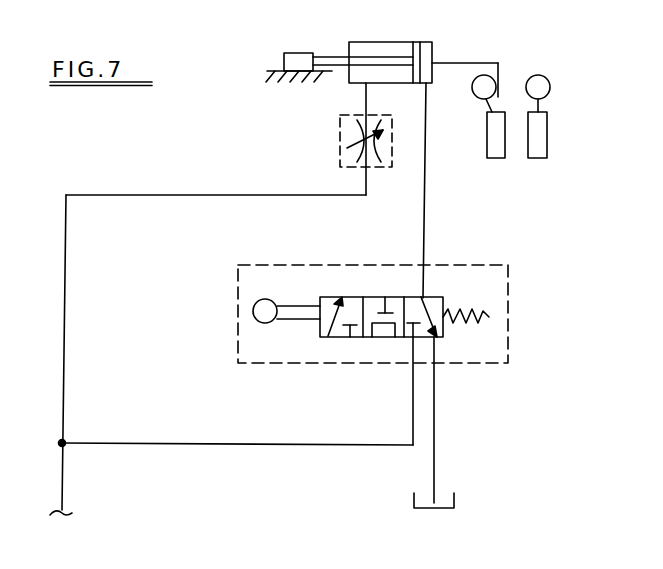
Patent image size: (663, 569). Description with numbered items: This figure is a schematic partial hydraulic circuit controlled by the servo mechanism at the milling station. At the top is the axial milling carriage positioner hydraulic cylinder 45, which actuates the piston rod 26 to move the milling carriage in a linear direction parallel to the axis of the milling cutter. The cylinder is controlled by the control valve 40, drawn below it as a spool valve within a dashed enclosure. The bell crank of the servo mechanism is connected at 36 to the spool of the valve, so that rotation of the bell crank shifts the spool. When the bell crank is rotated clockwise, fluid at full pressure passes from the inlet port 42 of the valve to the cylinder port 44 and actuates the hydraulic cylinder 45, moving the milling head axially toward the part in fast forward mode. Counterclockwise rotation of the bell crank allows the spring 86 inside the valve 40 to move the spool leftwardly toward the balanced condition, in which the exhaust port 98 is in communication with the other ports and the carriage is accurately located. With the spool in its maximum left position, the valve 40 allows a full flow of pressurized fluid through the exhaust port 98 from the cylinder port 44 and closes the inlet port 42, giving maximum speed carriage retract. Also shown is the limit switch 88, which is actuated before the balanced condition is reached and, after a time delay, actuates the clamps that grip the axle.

The piston rod 26 is at (332, 56).
The hydraulic cylinder 45 is at (392, 42).
The limit switch 88 is at (540, 137).
The cylinder port 44 is at (423, 299).
The control valve 40 is at (312, 363).
The inlet port 42 is at (410, 338).
The connection of bell crank to spool 36 is at (273, 300).
The spring 86 is at (482, 311).
The exhaust port 98 is at (436, 338).